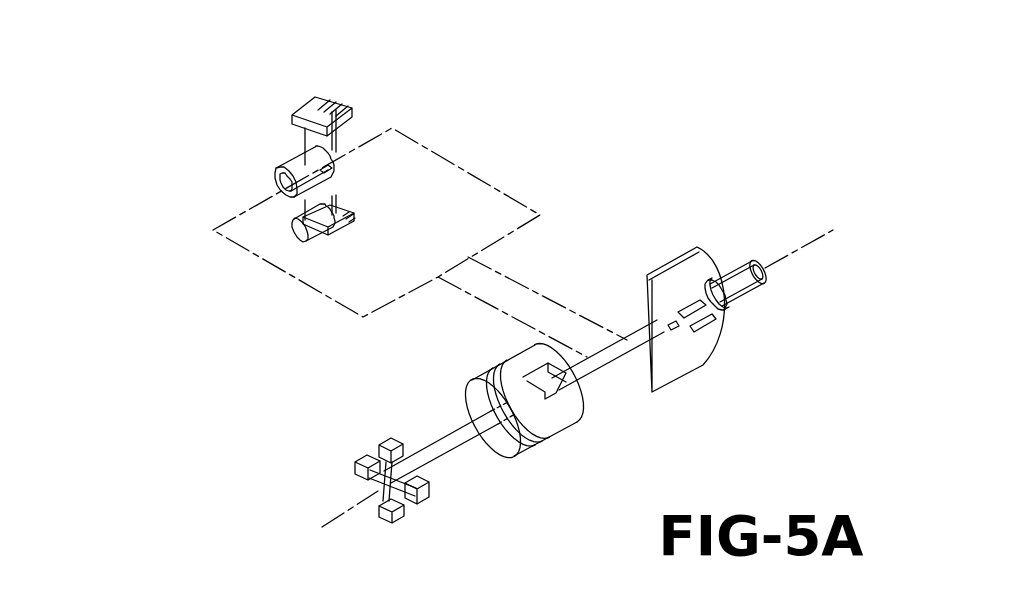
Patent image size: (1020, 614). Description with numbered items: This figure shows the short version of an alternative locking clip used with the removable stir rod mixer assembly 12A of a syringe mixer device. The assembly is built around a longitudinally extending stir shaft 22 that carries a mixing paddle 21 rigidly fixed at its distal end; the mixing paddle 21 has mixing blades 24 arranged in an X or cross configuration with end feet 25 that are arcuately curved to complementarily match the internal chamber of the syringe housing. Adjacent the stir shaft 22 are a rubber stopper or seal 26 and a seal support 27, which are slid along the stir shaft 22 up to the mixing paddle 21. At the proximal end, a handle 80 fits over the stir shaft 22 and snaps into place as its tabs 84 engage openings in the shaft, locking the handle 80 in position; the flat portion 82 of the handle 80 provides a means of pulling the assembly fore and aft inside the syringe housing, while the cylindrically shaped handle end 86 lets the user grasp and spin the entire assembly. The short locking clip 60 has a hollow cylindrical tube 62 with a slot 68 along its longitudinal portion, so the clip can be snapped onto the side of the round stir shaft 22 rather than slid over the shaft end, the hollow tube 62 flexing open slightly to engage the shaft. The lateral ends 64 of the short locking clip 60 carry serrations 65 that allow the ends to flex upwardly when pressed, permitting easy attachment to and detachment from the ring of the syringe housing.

The stir rod mixer assembly 12A is at (543, 152).
The mixing paddle 21 is at (414, 492).
The stir shaft 22 is at (447, 447).
The mixing blades 24 is at (370, 466).
The end feet 25 is at (420, 508).
The seal 26 is at (526, 418).
The seal support 27 is at (570, 407).
The short locking clip 60 is at (304, 185).
The hollow cylindrical tube 62 is at (284, 166).
The lateral ends 64 is at (308, 104).
The serrations 65 is at (340, 100).
The slot 68 is at (373, 184).
The handle 80 is at (707, 294).
The flat portion 82 is at (702, 278).
The tabs 84 is at (667, 335).
The handle end 86 is at (744, 288).